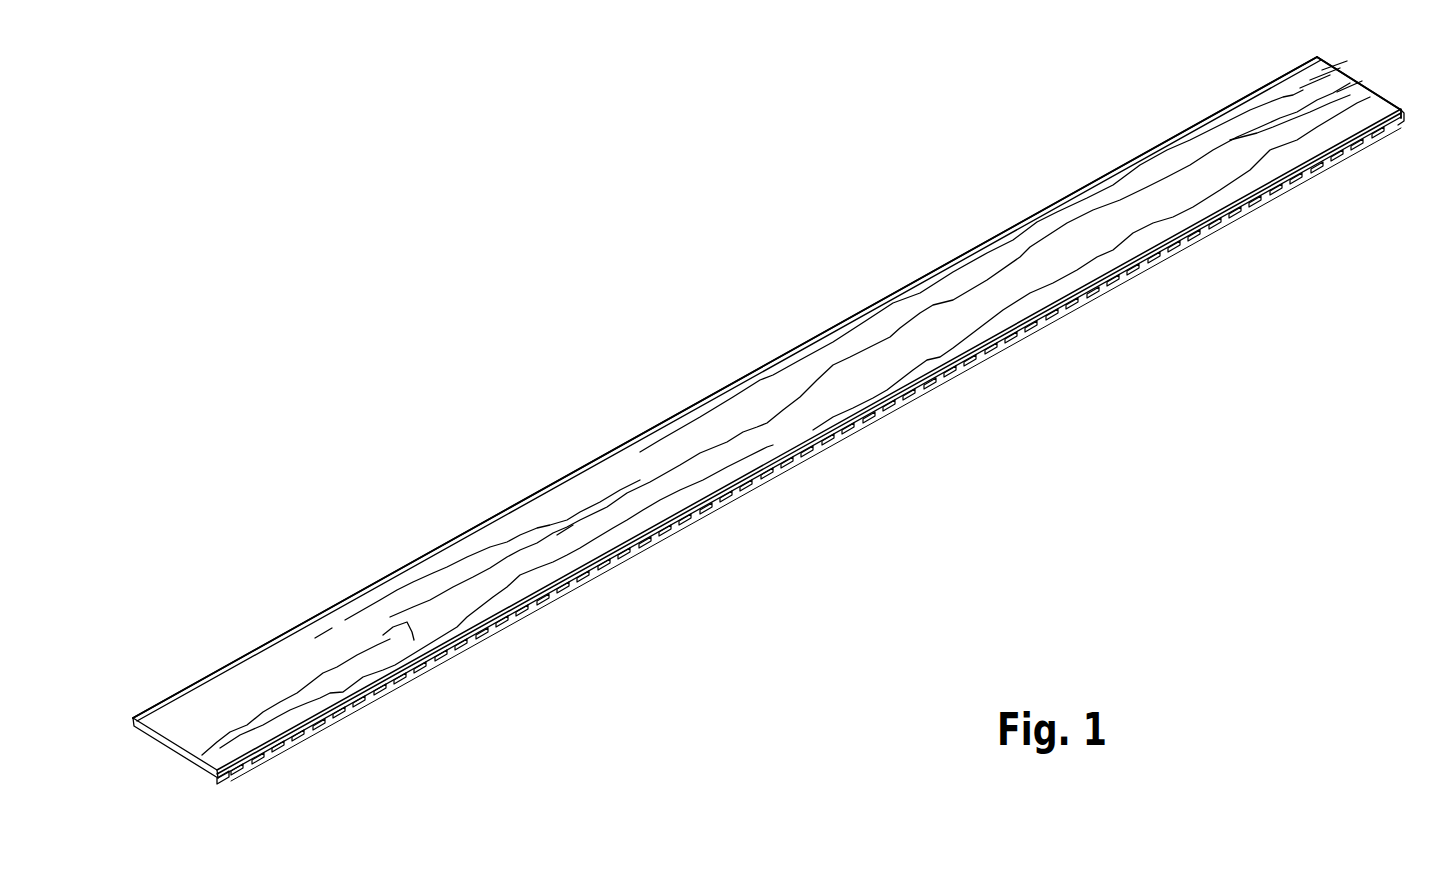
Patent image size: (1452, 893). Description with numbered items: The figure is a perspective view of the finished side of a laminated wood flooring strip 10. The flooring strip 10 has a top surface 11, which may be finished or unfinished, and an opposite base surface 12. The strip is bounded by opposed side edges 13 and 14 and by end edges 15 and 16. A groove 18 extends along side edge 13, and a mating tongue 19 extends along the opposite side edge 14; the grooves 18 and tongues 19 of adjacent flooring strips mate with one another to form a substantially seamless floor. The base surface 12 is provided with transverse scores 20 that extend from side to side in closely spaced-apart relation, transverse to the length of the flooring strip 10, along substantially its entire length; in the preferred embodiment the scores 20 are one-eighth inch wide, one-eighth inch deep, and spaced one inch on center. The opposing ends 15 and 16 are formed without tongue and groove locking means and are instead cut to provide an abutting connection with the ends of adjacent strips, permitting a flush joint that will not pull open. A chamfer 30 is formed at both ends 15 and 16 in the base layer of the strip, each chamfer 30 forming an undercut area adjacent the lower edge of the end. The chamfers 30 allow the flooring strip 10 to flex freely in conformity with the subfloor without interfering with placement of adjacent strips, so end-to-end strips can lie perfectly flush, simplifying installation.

The flooring strip 10 is at (746, 250).
The top surface 11 is at (588, 554).
The base surface 12 is at (1082, 306).
The side edge 13 is at (928, 396).
The side edge 14 is at (620, 428).
The end edge 15 is at (1405, 110).
The end edge 16 is at (146, 735).
The groove 18 is at (283, 750).
The tongue 19 is at (140, 716).
The scores 20 is at (1255, 207).
The chamfer 30 is at (220, 774).